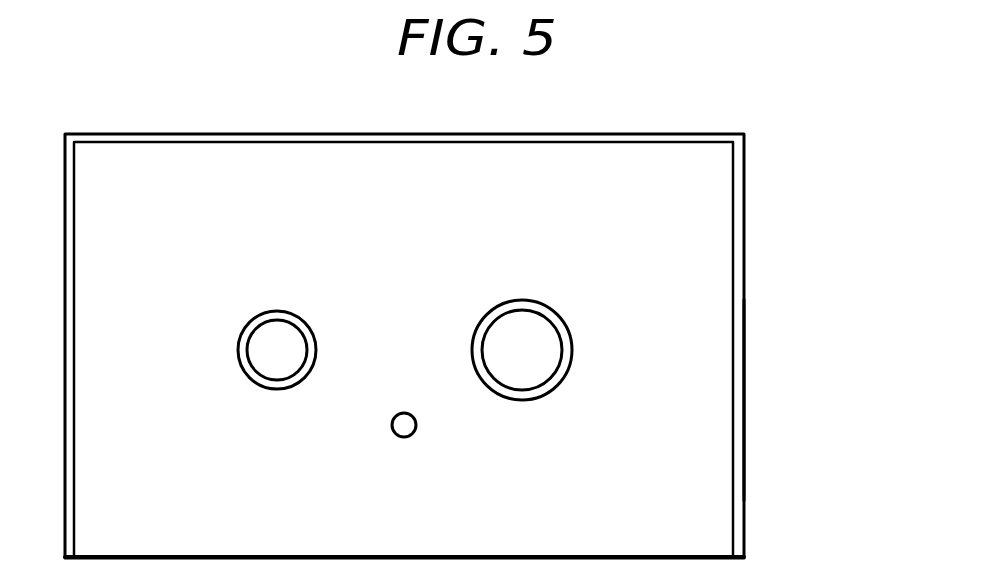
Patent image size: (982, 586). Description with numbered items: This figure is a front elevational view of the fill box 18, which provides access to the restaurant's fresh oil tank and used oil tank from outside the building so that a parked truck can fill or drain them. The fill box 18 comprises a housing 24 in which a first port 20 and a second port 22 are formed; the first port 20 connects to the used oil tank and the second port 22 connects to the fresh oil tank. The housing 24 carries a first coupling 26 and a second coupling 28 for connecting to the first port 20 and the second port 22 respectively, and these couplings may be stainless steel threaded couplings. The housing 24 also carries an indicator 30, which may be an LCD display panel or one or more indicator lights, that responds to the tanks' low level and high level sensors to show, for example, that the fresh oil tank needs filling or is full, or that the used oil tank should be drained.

The fill box 18 is at (765, 260).
The first port 20 is at (282, 332).
The second port 22 is at (523, 321).
The housing 24 is at (745, 397).
The first coupling 26 is at (246, 374).
The second coupling 28 is at (573, 353).
The indicator 30 is at (401, 413).